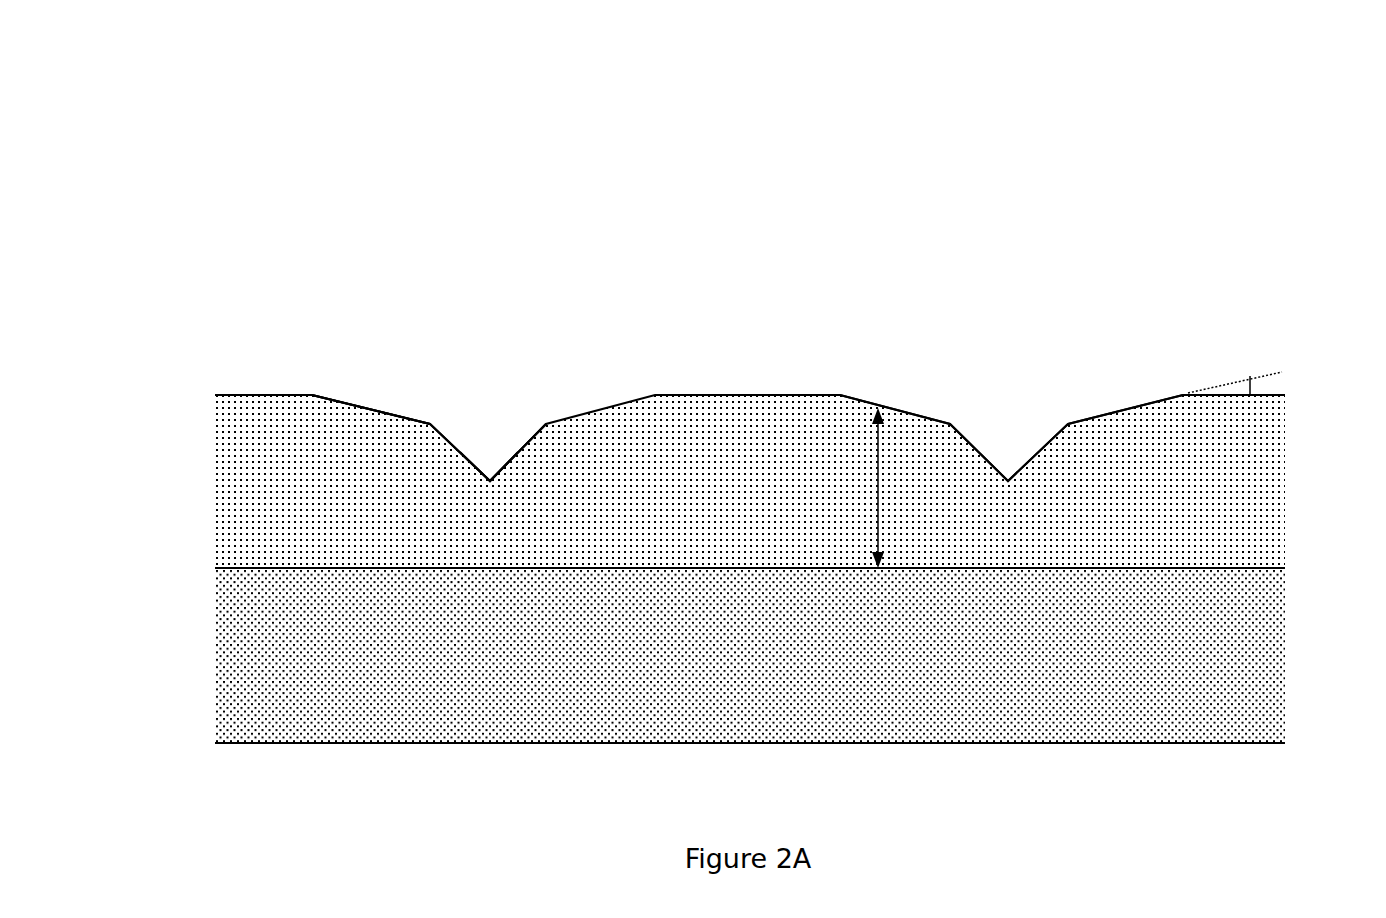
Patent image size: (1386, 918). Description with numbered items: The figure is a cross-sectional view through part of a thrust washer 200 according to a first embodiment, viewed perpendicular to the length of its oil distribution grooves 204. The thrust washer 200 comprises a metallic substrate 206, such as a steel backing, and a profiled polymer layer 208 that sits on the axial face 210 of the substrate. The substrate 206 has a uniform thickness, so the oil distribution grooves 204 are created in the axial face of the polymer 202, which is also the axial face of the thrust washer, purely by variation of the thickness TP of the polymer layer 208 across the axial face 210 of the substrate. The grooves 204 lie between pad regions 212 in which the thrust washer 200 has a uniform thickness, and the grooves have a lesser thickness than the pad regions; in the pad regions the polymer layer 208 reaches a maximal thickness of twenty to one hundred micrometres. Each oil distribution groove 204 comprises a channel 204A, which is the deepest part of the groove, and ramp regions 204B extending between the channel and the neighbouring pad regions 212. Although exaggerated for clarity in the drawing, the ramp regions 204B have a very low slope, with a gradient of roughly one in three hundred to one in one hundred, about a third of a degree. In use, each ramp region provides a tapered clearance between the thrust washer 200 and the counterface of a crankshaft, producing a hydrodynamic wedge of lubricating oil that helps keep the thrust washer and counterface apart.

The thrust washer 200 is at (695, 392).
The axial face of the polymer 202 is at (1130, 398).
The oil distribution groove 204 is at (575, 236).
The channel 204A is at (490, 480).
The ramp region 204B is at (362, 405).
The metallic substrate 206 is at (273, 642).
The profiled polymer layer 208 is at (273, 512).
The axial face of the substrate 210 is at (781, 555).
The pad region 212 is at (270, 395).
The thickness of the polymer layer TP is at (878, 478).